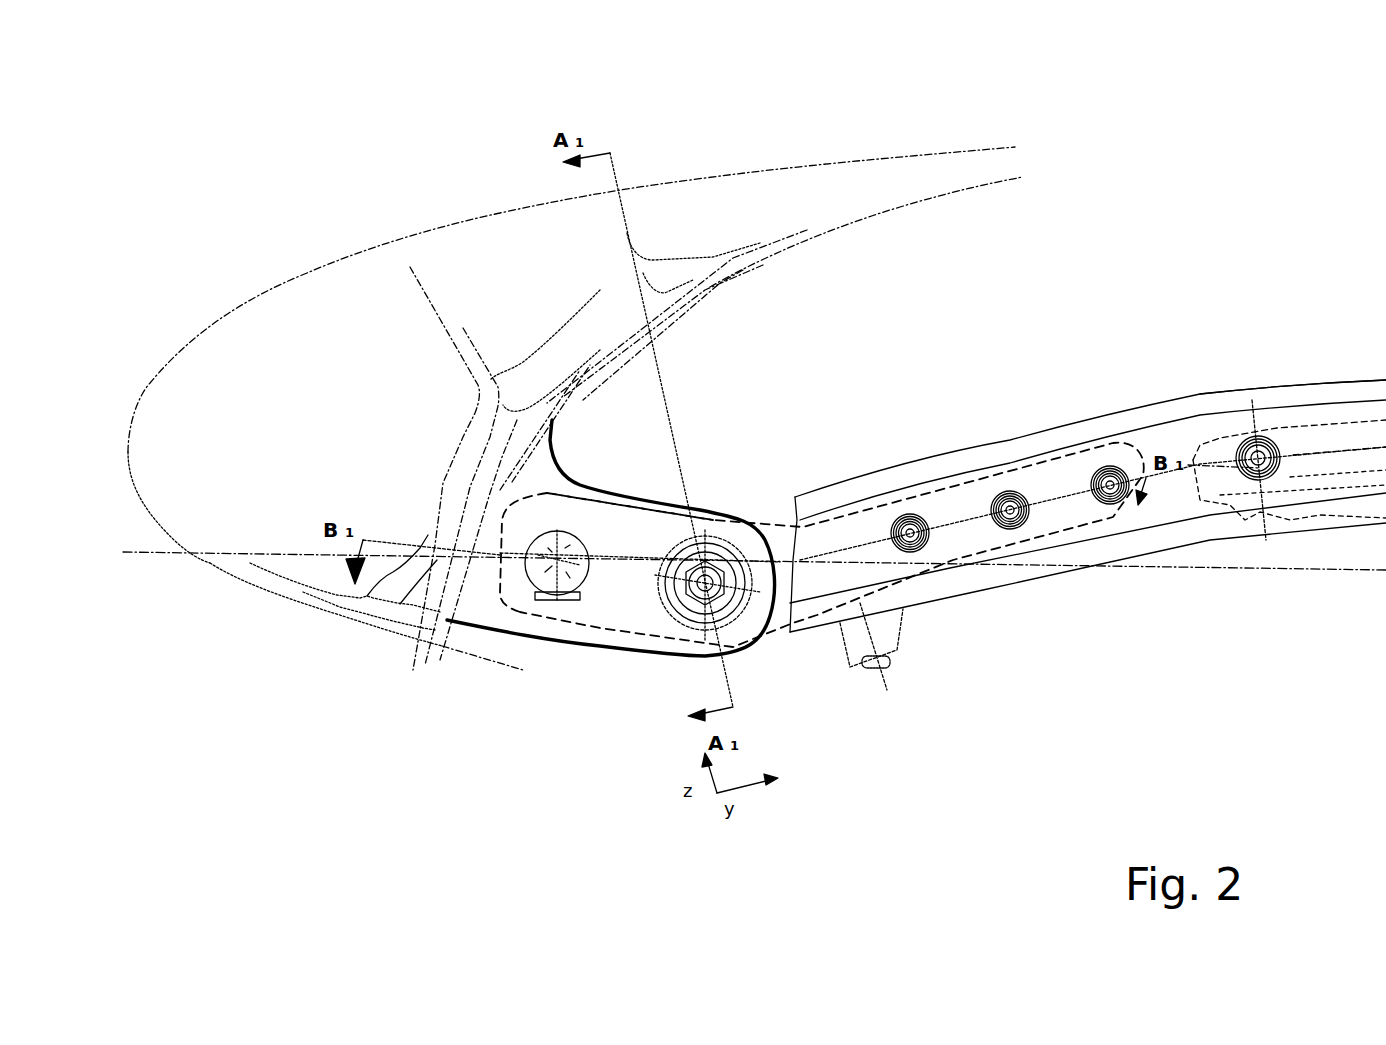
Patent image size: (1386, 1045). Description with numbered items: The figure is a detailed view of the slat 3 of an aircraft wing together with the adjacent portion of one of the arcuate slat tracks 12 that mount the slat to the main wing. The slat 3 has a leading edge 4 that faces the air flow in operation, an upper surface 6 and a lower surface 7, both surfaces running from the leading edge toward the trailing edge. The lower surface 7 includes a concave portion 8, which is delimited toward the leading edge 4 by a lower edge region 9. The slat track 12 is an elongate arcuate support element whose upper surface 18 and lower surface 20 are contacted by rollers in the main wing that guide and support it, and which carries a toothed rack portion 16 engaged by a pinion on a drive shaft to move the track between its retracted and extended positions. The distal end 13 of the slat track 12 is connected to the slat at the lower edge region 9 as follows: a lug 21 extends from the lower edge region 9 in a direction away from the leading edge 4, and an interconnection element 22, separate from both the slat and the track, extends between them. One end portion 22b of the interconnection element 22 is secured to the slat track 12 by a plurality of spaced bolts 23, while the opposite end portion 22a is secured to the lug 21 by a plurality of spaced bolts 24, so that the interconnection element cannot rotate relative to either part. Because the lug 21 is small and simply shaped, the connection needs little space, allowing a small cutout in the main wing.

The slat 3 is at (690, 200).
The leading edge 4 is at (133, 428).
The upper surface 6 is at (440, 228).
The lower surface 7 is at (283, 596).
The concave portion 8 is at (724, 397).
The lower edge region 9 is at (442, 620).
The slat track 12 is at (1312, 393).
The distal end 13 is at (808, 635).
The toothed rack portion 16 is at (1310, 513).
The upper surface 18 is at (1065, 420).
The lower surface 20 is at (1048, 573).
The lug 21 is at (617, 493).
The interconnection element 22 is at (778, 613).
The end portion 22a is at (597, 630).
The end portion 22b is at (943, 565).
The bolts 23 is at (912, 533).
The bolts 24 is at (556, 560).